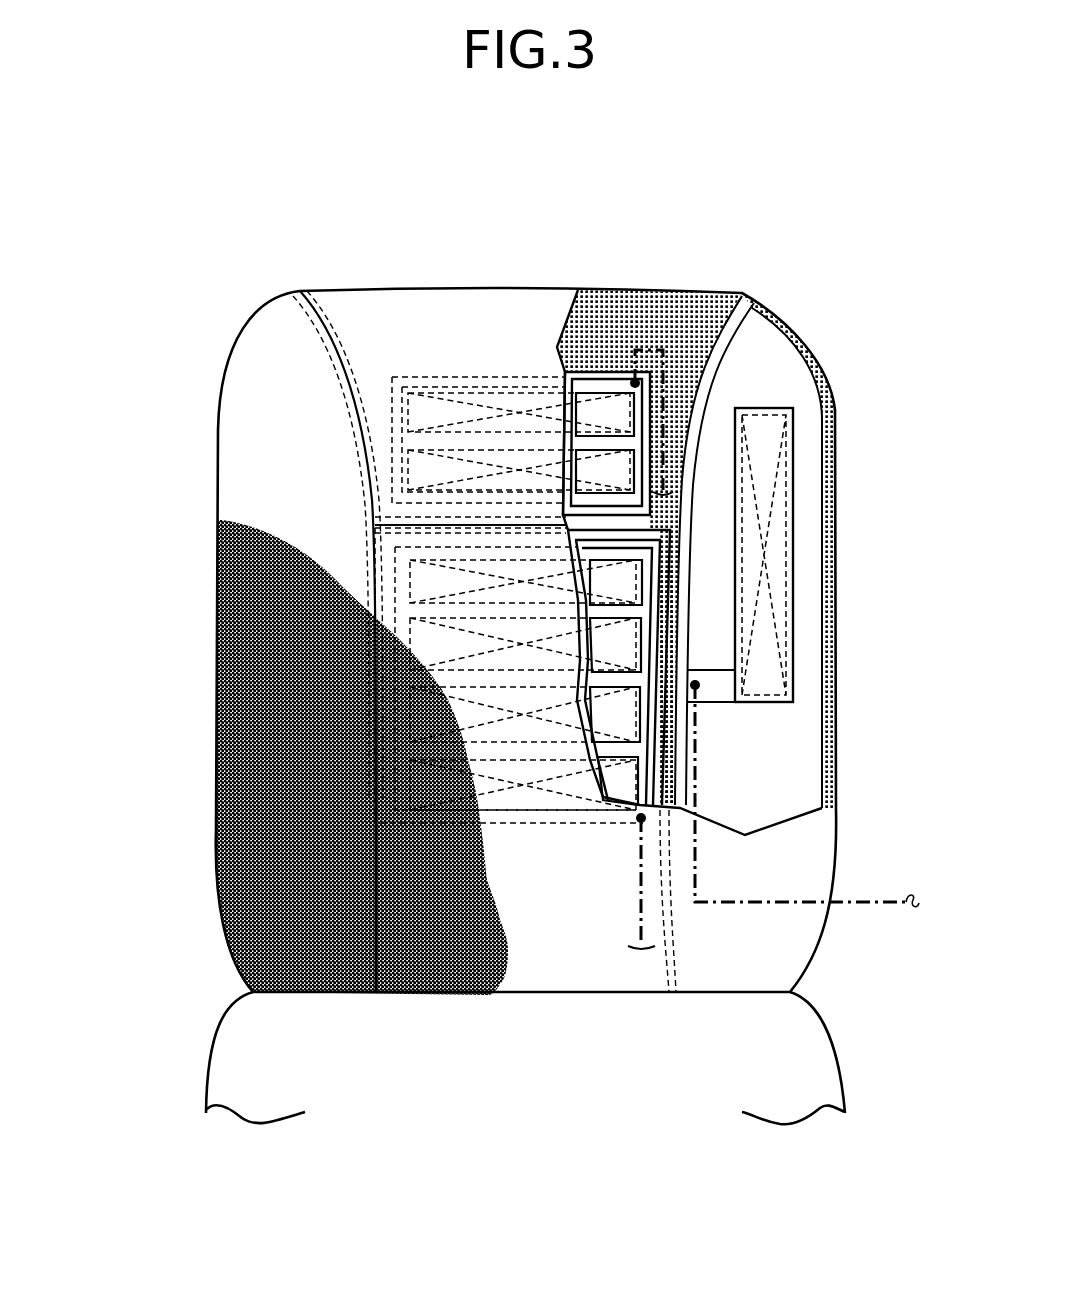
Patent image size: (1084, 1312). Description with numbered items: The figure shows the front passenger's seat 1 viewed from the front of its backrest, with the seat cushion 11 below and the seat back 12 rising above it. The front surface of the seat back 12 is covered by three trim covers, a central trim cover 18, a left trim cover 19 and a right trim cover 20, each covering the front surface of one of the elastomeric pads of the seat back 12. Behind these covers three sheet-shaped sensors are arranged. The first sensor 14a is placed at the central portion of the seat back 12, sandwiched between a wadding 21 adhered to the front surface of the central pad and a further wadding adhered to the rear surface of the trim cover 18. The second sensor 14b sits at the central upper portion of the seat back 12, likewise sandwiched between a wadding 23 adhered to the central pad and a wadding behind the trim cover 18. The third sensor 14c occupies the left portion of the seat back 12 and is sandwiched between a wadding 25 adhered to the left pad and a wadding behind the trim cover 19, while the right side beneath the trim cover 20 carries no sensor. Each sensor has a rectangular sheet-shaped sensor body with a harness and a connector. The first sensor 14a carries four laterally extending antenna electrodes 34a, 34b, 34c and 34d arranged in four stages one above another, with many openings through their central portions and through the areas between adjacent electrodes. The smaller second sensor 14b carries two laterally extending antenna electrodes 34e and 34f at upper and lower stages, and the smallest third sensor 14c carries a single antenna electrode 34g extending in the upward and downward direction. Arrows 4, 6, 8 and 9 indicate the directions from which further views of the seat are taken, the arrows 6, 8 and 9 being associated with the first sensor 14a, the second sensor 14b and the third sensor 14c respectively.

The front passenger's seat 1 is at (470, 624).
The seat cushion 11 is at (209, 1027).
The seat back 12 is at (352, 289).
The trim cover 18 is at (395, 313).
The trim cover 20 is at (243, 462).
The wadding 23 is at (568, 327).
The wadding 25 is at (772, 340).
The trim cover 19 is at (808, 858).
The first sensor 14a is at (385, 556).
The second sensor 14b is at (446, 372).
The third sensor 14c is at (800, 424).
The antenna electrode 34a is at (565, 832).
The antenna electrode 34b is at (423, 718).
The antenna electrode 34c is at (420, 655).
The antenna electrode 34d is at (420, 585).
The antenna electrode 34e is at (403, 460).
The antenna electrode 34f is at (388, 403).
The antenna electrode 34g is at (780, 566).
The wadding 21 is at (700, 724).
The section line IV-IV 4 is at (132, 698).
The section line VI 6 is at (540, 840).
The section line VIII 8 is at (606, 366).
The section line IX 9 is at (808, 509).